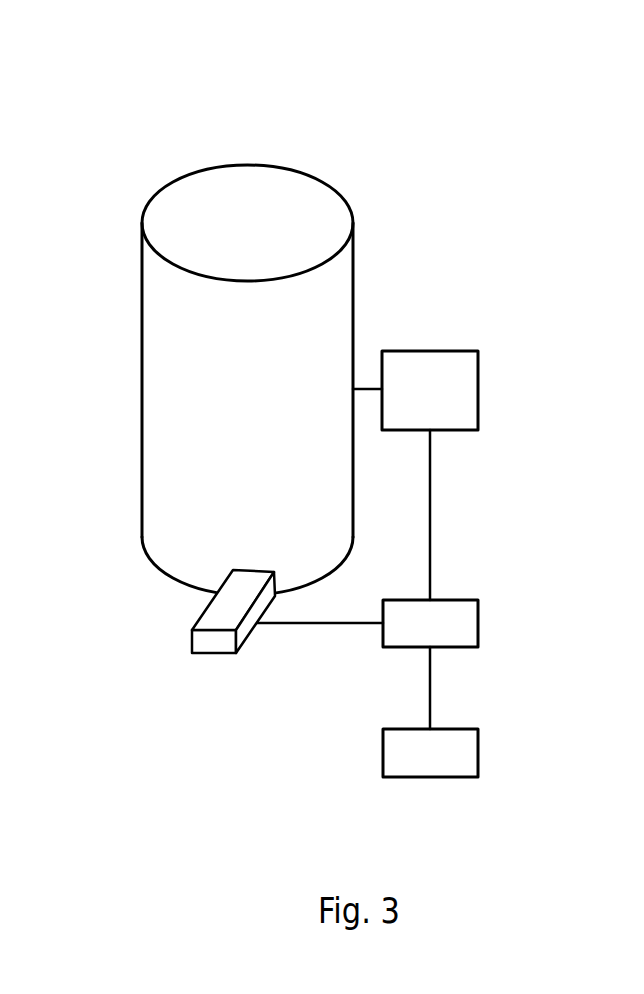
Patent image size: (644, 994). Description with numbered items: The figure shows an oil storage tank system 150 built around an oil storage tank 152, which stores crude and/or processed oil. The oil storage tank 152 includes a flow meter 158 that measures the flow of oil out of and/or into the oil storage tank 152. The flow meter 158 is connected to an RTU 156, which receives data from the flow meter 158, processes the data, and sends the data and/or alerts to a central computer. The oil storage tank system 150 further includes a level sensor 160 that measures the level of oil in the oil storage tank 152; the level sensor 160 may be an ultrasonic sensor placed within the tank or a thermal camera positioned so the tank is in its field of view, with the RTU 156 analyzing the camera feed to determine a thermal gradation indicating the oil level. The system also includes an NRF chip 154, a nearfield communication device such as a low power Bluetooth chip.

The oil storage tank system 150 is at (124, 100).
The oil storage tank 152 is at (142, 399).
The NRF chip 154 is at (478, 752).
The RTU 156 is at (478, 620).
The flow meter 158 is at (197, 620).
The level sensor 160 is at (478, 372).